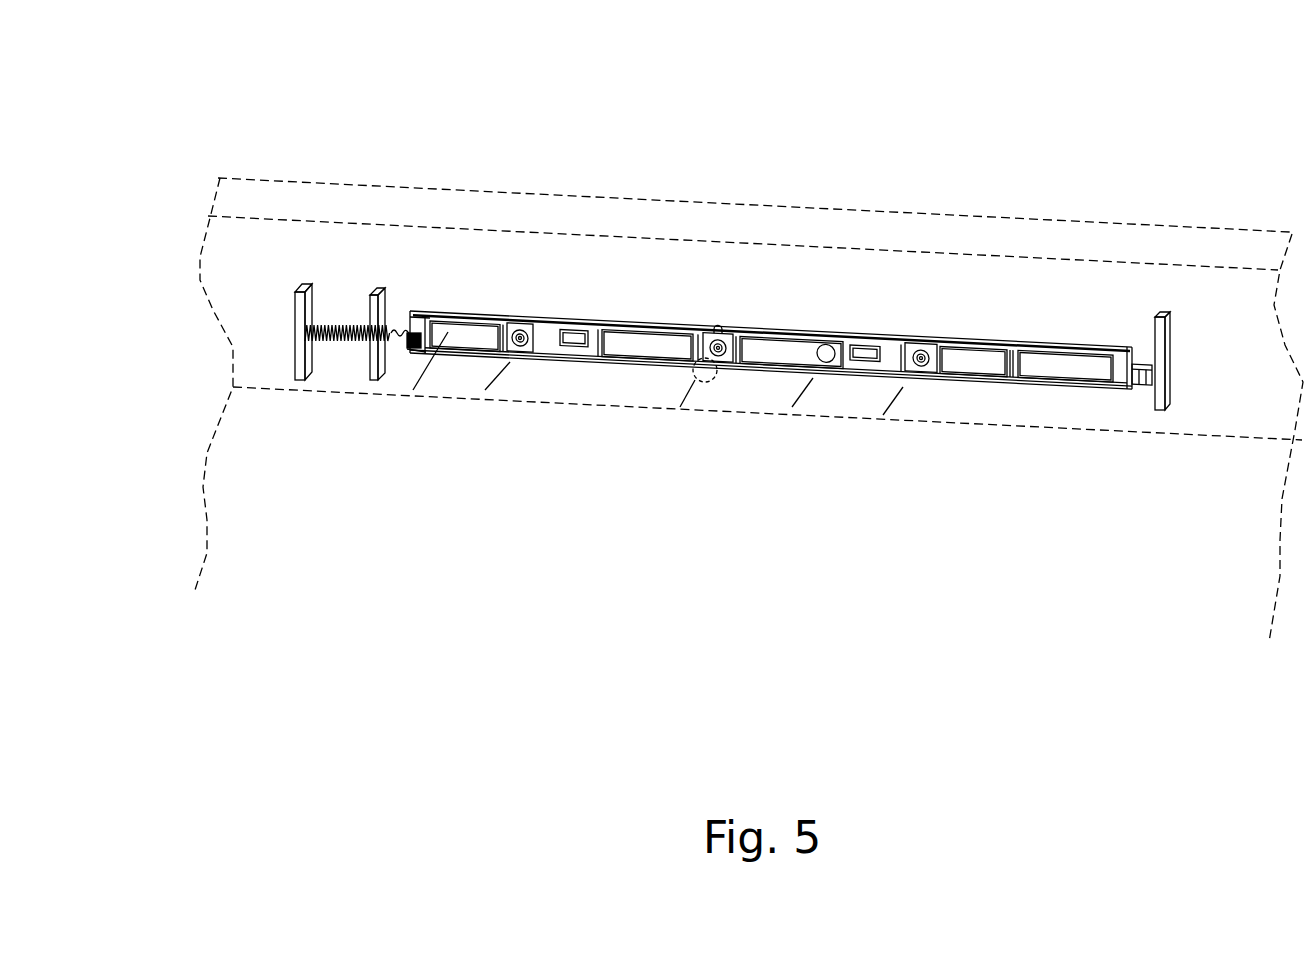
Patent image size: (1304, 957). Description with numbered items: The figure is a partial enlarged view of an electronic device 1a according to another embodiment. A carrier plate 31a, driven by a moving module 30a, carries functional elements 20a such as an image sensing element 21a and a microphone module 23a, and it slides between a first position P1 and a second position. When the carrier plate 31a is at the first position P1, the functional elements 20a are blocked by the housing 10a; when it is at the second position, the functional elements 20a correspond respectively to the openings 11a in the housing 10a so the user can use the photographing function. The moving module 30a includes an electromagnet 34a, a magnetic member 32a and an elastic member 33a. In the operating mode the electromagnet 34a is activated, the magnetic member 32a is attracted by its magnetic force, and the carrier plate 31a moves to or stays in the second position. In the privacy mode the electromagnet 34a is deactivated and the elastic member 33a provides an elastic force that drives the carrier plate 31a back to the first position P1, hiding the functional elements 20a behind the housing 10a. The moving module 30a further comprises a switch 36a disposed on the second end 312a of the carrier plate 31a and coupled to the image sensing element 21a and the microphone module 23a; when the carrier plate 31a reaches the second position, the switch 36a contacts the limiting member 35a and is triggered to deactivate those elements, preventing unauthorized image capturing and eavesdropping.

The electronic device 1a is at (215, 126).
The housing 10a is at (222, 204).
The openings 11a is at (510, 357).
The functional elements 20a is at (970, 183).
The image sensing element 21a is at (716, 333).
The microphone module 23a is at (518, 323).
The moving module 30a is at (318, 278).
The carrier plate 31a is at (1060, 346).
The second end 312a is at (411, 337).
The magnetic member 32a is at (1138, 388).
The elastic member 33a is at (335, 340).
The electromagnet 34a is at (1150, 388).
The limiting member 35a is at (377, 342).
The switch 36a is at (415, 352).
The first position P1 is at (1112, 204).